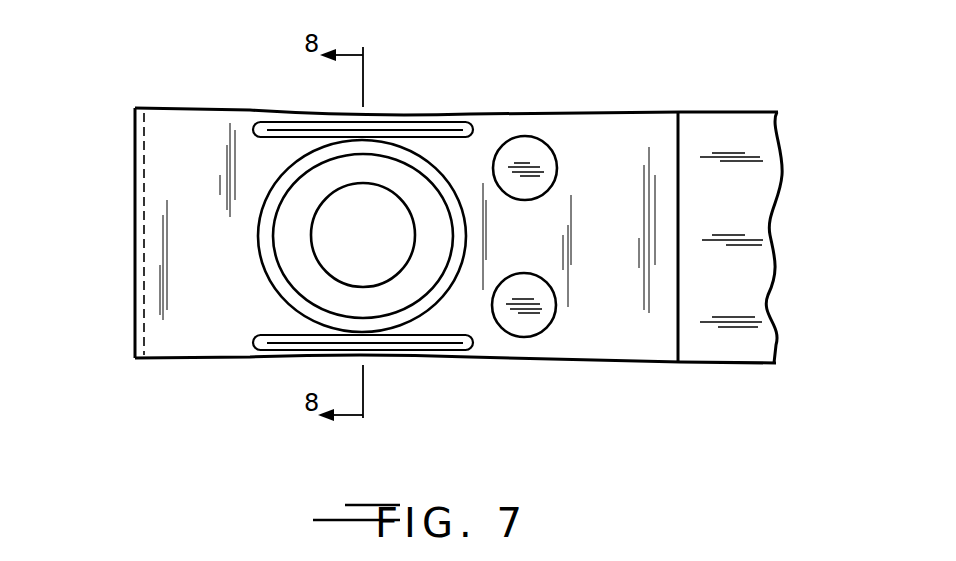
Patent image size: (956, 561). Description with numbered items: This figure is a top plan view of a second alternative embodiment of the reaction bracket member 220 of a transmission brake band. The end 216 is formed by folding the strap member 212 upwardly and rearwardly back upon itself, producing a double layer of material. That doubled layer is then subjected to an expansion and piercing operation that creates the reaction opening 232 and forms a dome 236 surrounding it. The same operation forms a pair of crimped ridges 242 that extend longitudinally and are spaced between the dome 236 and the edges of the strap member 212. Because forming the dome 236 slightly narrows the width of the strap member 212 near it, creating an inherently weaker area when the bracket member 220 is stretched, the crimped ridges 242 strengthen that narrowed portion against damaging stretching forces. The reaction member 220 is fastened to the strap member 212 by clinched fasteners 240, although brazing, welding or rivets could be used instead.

The strap member 212 is at (708, 130).
The end 216 is at (223, 360).
The reaction bracket member 220 is at (182, 122).
The reaction opening 232 is at (335, 252).
The dome 236 is at (383, 170).
The clinched fasteners 240 is at (523, 150).
The crimped ridges 242 is at (293, 130).